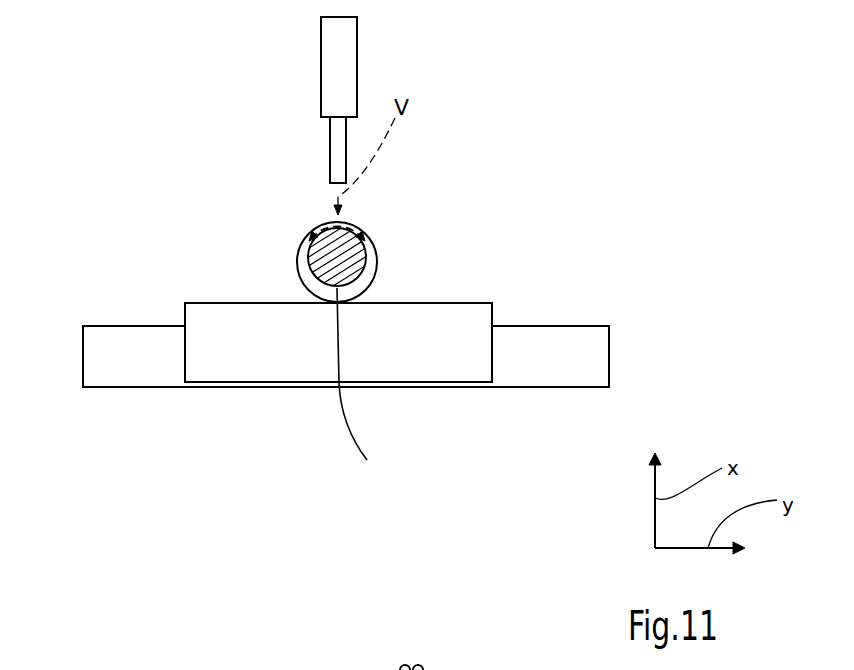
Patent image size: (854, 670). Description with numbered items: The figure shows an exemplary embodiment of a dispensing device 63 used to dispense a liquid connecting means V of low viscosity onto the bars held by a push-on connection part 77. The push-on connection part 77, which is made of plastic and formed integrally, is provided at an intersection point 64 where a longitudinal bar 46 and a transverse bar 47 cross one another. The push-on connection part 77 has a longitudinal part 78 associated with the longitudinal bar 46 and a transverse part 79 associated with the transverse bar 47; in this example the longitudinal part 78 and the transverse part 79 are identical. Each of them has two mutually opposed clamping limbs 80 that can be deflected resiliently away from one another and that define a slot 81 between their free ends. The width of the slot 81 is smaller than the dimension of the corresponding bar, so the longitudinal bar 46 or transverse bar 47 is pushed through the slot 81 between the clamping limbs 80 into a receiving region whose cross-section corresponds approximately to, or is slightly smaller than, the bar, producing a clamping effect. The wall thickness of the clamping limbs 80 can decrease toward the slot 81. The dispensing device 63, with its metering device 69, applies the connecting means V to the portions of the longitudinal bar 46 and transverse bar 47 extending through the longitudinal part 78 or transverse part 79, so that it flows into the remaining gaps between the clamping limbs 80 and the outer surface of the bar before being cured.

The longitudinal bar 46 is at (358, 262).
The transverse bar 47 is at (598, 358).
The dispensing device 63 is at (353, 91).
The intersection point 64 is at (436, 271).
The metering device 69 is at (330, 77).
The push-on connection part 77 is at (238, 267).
The longitudinal part 78 is at (366, 379).
The transverse part 79 is at (493, 313).
The clamping limbs 80 is at (298, 250).
The slot 81 is at (315, 228).